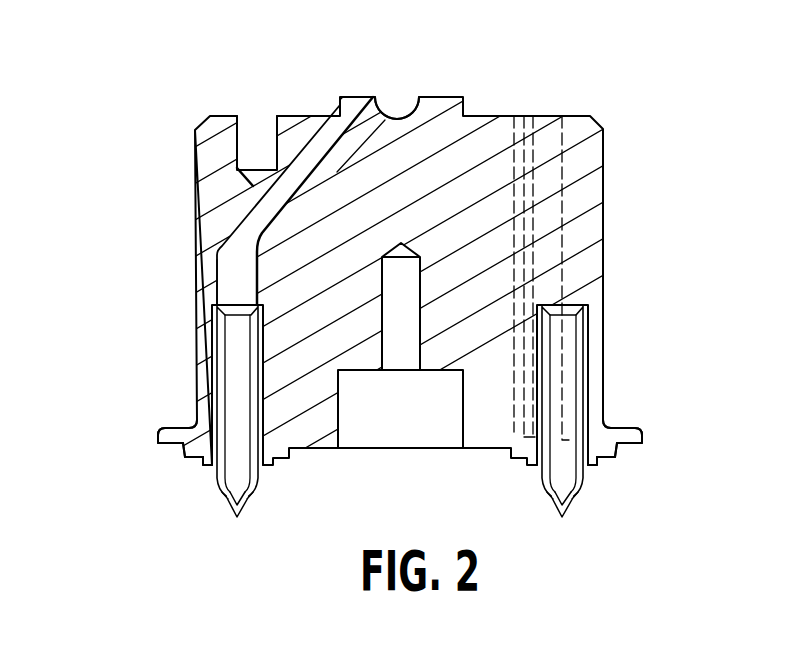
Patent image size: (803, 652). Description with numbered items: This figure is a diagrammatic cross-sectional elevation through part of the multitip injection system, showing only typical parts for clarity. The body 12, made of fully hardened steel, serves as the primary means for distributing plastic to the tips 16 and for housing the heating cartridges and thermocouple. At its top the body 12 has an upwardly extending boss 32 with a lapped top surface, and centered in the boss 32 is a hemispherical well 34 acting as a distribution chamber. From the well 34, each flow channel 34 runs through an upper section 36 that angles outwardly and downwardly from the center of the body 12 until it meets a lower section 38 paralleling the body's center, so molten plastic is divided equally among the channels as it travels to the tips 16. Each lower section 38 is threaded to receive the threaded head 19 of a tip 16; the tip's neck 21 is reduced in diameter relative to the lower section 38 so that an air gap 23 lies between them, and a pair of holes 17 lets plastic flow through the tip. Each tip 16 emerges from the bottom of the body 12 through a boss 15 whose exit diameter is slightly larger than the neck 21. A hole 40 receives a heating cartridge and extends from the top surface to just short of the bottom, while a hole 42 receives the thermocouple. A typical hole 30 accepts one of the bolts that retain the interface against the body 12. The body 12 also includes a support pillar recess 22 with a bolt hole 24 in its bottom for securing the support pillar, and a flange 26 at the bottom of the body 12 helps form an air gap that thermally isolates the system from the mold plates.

The body 12 is at (619, 195).
The boss 15 is at (182, 450).
The tip 16 is at (216, 371).
The holes 17 is at (225, 497).
The threaded head 19 is at (257, 336).
The neck 21 is at (255, 407).
The support pillar recess 22 is at (342, 414).
The air gap 23 is at (203, 467).
The bolt hole 24 is at (384, 348).
The flange 26 is at (175, 427).
The hole 30 is at (268, 127).
The boss 32 is at (361, 96).
The flow channel 34 is at (410, 103).
The upper section 36 is at (250, 230).
The lower section 38 is at (232, 283).
The hole 40 is at (562, 136).
The hole 42 is at (516, 128).